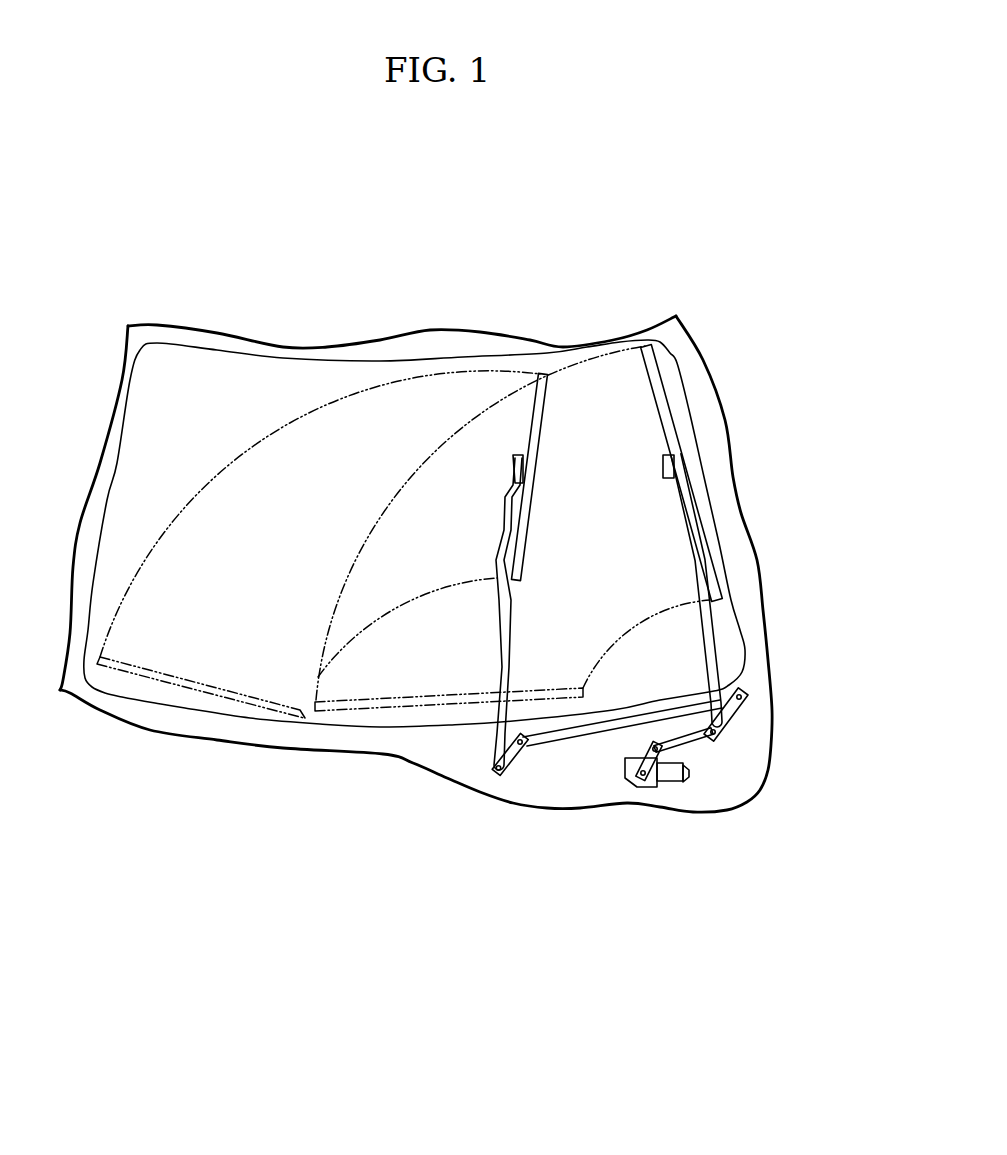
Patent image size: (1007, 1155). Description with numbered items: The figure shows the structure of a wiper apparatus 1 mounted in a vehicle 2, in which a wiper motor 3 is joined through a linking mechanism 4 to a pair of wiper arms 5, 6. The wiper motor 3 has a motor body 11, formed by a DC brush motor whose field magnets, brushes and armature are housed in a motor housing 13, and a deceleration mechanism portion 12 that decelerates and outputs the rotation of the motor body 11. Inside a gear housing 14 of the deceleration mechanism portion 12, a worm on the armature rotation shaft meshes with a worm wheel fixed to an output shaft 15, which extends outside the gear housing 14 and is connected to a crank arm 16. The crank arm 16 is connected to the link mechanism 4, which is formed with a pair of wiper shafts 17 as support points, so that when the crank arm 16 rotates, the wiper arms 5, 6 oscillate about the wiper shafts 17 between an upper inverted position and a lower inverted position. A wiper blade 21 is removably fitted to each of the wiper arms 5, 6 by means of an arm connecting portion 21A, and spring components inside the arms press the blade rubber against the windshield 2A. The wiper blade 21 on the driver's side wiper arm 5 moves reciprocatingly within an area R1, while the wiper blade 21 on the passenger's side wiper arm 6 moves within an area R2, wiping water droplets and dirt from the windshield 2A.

The wiper apparatus 1 is at (629, 621).
The vehicle 2 is at (708, 348).
The windshield 2A is at (182, 360).
The wiper motor 3 is at (674, 848).
The linking mechanism 4 is at (577, 748).
The wiper arm 5 is at (500, 662).
The wiper arm 6 is at (712, 650).
The motor body 11 is at (671, 795).
The deceleration mechanism portion 12 is at (615, 782).
The motor housing 13 is at (700, 795).
The gear housing 14 is at (652, 786).
The output shaft 15 is at (634, 786).
The crank arm 16 is at (660, 787).
The wiper shaft 17 is at (498, 770).
The wiper blade 21 is at (537, 427).
The arm connecting portion 21A is at (520, 472).
The area R1 is at (285, 417).
The area R2 is at (577, 360).